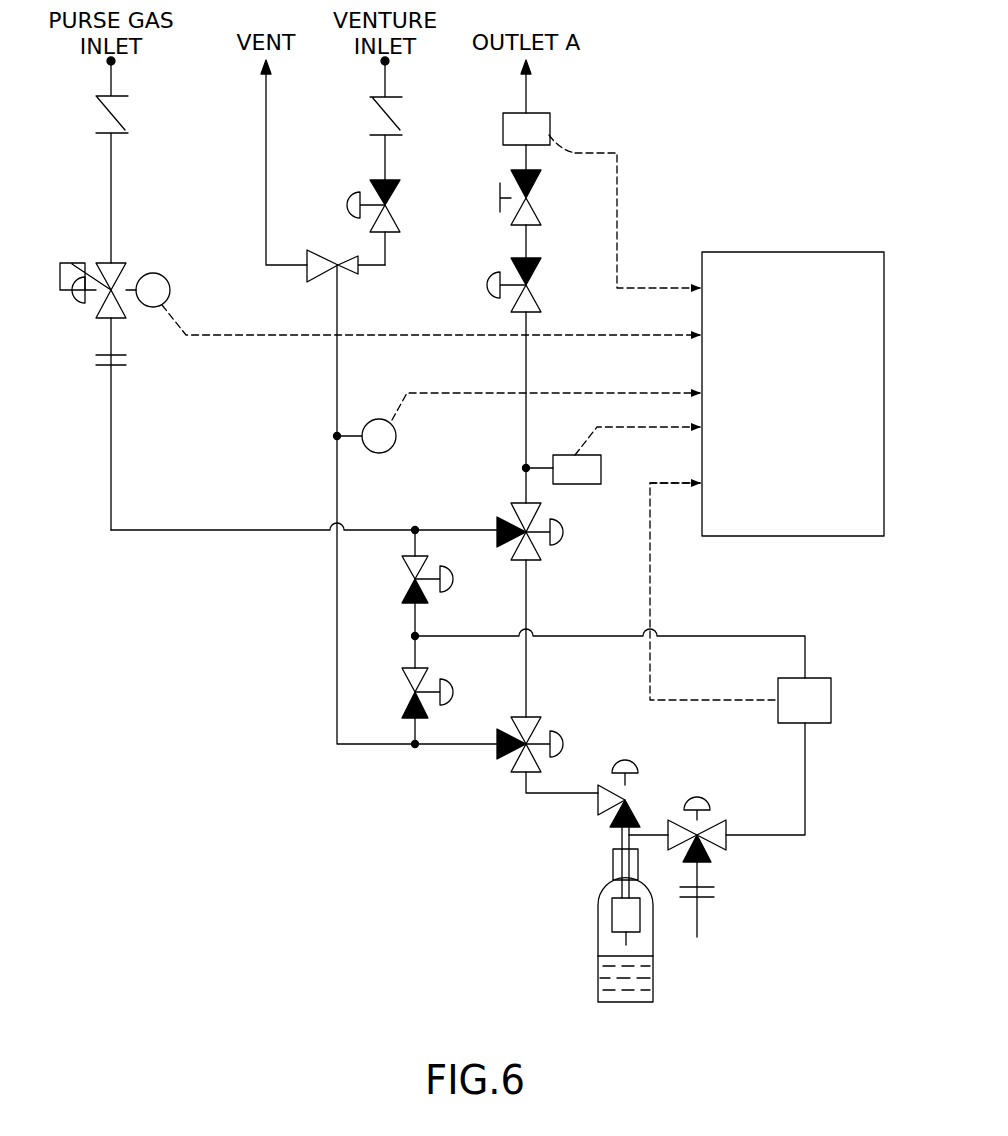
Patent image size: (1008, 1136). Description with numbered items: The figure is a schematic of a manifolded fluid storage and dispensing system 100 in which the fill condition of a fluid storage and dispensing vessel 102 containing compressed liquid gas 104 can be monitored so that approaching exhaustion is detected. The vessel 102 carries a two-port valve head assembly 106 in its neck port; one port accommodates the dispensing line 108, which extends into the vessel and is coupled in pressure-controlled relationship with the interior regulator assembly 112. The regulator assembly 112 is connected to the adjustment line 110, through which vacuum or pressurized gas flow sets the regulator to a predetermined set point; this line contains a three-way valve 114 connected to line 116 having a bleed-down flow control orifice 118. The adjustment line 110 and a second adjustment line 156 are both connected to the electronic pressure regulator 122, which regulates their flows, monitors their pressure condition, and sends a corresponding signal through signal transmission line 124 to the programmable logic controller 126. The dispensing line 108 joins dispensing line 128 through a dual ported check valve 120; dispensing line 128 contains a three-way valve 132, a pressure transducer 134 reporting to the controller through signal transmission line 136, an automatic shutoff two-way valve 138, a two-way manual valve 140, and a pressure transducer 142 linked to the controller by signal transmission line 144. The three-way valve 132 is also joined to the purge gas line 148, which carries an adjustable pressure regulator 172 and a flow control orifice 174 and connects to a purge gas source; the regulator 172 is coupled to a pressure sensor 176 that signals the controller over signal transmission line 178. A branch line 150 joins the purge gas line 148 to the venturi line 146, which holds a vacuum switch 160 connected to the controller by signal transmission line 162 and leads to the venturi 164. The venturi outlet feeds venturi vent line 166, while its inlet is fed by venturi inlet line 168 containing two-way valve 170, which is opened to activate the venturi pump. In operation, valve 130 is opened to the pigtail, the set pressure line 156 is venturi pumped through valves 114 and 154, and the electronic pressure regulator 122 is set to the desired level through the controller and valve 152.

The manifolded fluid storage and dispensing system 100 is at (184, 718).
The fluid storage and dispensing vessel 102 is at (598, 968).
The compressed liquid gas 104 is at (640, 975).
The valve head assembly 106 is at (622, 870).
The dispensing line 108 is at (622, 840).
The adjustment line 110 is at (657, 835).
The interior regulator assembly 112 is at (612, 912).
The three-way valve 114 is at (704, 802).
The line 116 is at (700, 872).
The bleed-down flow control orifice 118 is at (705, 897).
The dual ported check valve 120 is at (622, 760).
The electronic pressure regulator 122 is at (831, 692).
The signal transmission line 124 is at (651, 574).
The programmable logic controller 126 is at (850, 515).
The dispensing line 128 is at (528, 368).
The valve 130 is at (565, 742).
The three-way valve 132 is at (566, 528).
The pressure transducer 134 is at (601, 466).
The signal transmission line 136 is at (597, 430).
The two-way valve 138 is at (487, 282).
The two-way manual valve 140 is at (500, 192).
The pressure transducer 142 is at (503, 124).
The signal transmission line 144 is at (618, 186).
The venturi line 146 is at (337, 628).
The purge gas line 148 is at (237, 528).
The branch line 150 is at (414, 628).
The valve 152 is at (455, 584).
The valve 154 is at (456, 690).
The adjustment line 156 is at (597, 634).
The vacuum switch 160 is at (394, 445).
The signal transmission line 162 is at (447, 393).
The venturi 164 is at (305, 272).
The venturi vent line 166 is at (266, 122).
The venturi inlet line 168 is at (387, 152).
The two-way valve 170 is at (350, 200).
The adjustable pressure regulator 172 is at (76, 272).
The flow control orifice 174 is at (118, 365).
The pressure sensor 176 is at (166, 278).
The signal transmission line 178 is at (238, 337).